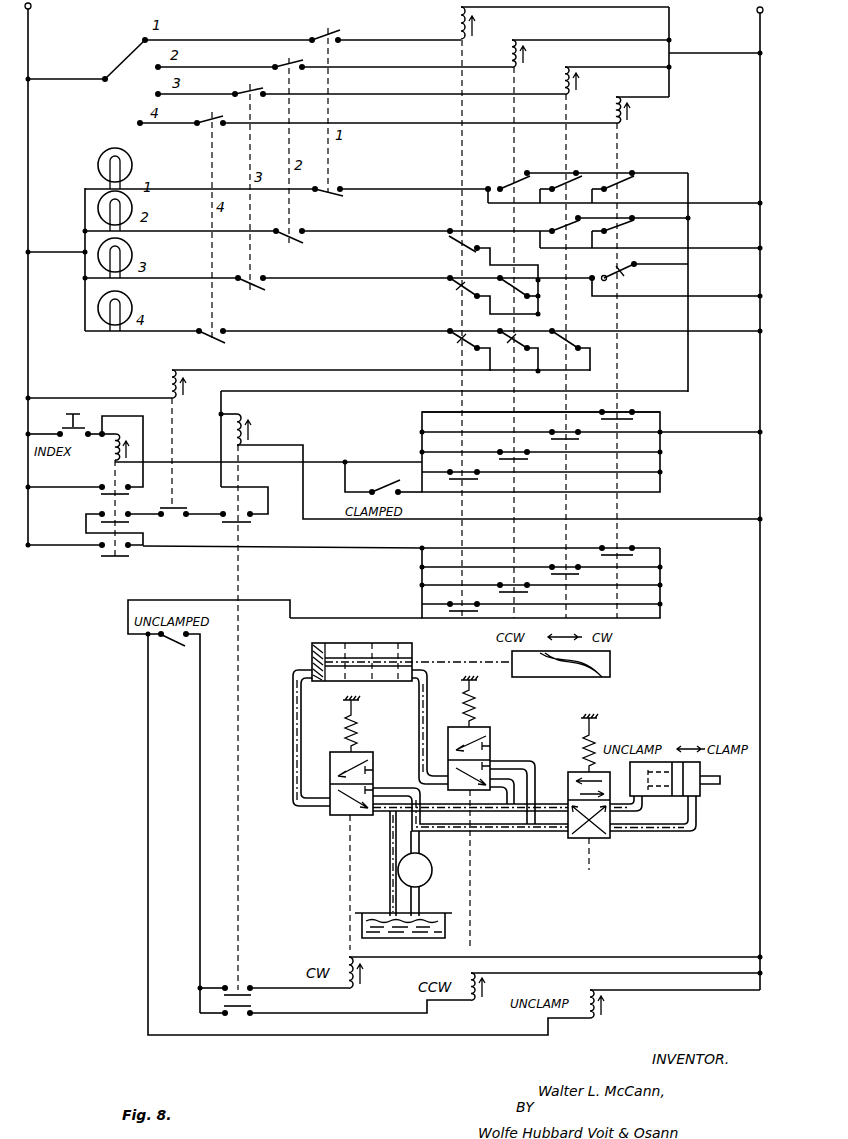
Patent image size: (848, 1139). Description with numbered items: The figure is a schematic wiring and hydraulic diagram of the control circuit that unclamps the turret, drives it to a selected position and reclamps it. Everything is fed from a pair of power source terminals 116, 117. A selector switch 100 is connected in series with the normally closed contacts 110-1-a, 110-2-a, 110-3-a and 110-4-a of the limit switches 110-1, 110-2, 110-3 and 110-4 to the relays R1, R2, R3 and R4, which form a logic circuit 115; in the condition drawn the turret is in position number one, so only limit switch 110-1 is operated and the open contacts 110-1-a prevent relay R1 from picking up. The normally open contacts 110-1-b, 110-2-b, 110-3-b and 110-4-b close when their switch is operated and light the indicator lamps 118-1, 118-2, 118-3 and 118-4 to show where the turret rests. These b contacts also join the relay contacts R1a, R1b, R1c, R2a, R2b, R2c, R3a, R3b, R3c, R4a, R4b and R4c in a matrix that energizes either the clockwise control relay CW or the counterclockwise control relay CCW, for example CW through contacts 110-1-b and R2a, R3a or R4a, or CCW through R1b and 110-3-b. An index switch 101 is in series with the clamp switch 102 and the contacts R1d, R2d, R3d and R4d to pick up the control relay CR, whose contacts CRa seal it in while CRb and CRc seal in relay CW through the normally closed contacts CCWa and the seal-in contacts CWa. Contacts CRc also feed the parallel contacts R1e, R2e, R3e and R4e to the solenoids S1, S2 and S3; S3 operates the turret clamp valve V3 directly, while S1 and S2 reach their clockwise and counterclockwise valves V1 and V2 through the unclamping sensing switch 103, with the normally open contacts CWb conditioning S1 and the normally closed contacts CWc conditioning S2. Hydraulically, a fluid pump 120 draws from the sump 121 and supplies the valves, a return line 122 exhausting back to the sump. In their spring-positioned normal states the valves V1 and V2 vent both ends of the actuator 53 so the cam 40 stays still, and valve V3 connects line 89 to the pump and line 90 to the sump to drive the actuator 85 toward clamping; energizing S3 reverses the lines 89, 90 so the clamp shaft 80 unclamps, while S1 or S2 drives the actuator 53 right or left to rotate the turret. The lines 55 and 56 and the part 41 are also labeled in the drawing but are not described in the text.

The power source terminal 116 is at (32, 10).
The power source terminal 117 is at (757, 13).
The selector switch 100 is at (128, 90).
The limit switch 110-1 is at (335, 30).
The limit switch contacts 110-1-a is at (340, 45).
The limit switch 110-2 is at (291, 63).
The limit switch contacts 110-2-a is at (305, 72).
The limit switch 110-3 is at (251, 88).
The limit switch contacts 110-3-a is at (266, 98).
The limit switch 110-4 is at (220, 115).
The limit switch contacts 110-4-a is at (218, 128).
The limit switch contacts 110-1-b is at (340, 184).
The limit switch contacts 110-2-b is at (292, 225).
The limit switch contacts 110-3-b is at (258, 272).
The limit switch contacts 110-4-b is at (218, 325).
The indicator lamp 118-1 is at (98, 160).
The indicator lamp 118-2 is at (132, 212).
The indicator lamp 118-3 is at (132, 258).
The indicator lamp 118-4 is at (132, 300).
The logic circuit 115 is at (684, 156).
The index switch 101 is at (96, 392).
The clamp switch 102 is at (386, 478).
The turret unclamping sensing switch 103 is at (170, 648).
The relay R1 is at (565, 23).
The relay R2 is at (520, 40).
The relay R3 is at (560, 82).
The relay R4 is at (608, 98).
The relay contacts R1a is at (458, 228).
The relay contacts R1b is at (452, 290).
The relay contacts R1c is at (452, 340).
The relay contacts R1d is at (458, 476).
The relay contacts R1e is at (452, 602).
The relay contacts R2a is at (503, 172).
The relay contacts R2b is at (525, 282).
The relay contacts R2c is at (514, 360).
The relay contacts R2d is at (510, 450).
The relay contacts R2e is at (510, 583).
The relay contacts R3a is at (557, 172).
The relay contacts R3b is at (560, 228).
The relay contacts R3c is at (570, 338).
The relay contacts R3d is at (562, 430).
The relay contacts R3e is at (570, 564).
The relay contacts R4a is at (613, 172).
The relay contacts R4b is at (624, 216).
The relay contacts R4c is at (628, 272).
The relay contacts R4d is at (618, 410).
The relay contacts R4e is at (628, 546).
The control relay CR is at (128, 432).
The control relay contacts CRa is at (108, 486).
The control relay contacts CRb is at (106, 512).
The control relay contacts CRc is at (102, 556).
The counterclockwise control relay CCW is at (166, 380).
The control relay contacts CCWa is at (170, 526).
The clockwise control relay CW is at (252, 428).
The control relay contacts CWa is at (244, 530).
The control relay contacts CWb is at (248, 982).
The control relay contacts CWc is at (252, 1008).
The solenoid S1 is at (348, 994).
The solenoid S2 is at (462, 1010).
The solenoid S3 is at (588, 1028).
The actuator 53 is at (304, 663).
The hydraulic line 55 is at (292, 726).
The hydraulic line 56 is at (420, 716).
The clockwise movement controlling valve V1 is at (338, 816).
The counterclockwise movement controlling valve V2 is at (492, 748).
The turret clamp valve V3 is at (598, 840).
The cam 40 is at (608, 660).
The motor shaft 41 is at (577, 670).
The fluid pump 120 is at (434, 878).
The sump 121 is at (450, 926).
The return line 122 is at (388, 850).
The clamp shaft 80 is at (712, 796).
The actuator 85 is at (718, 775).
The line 89 is at (626, 812).
The line 90 is at (694, 832).